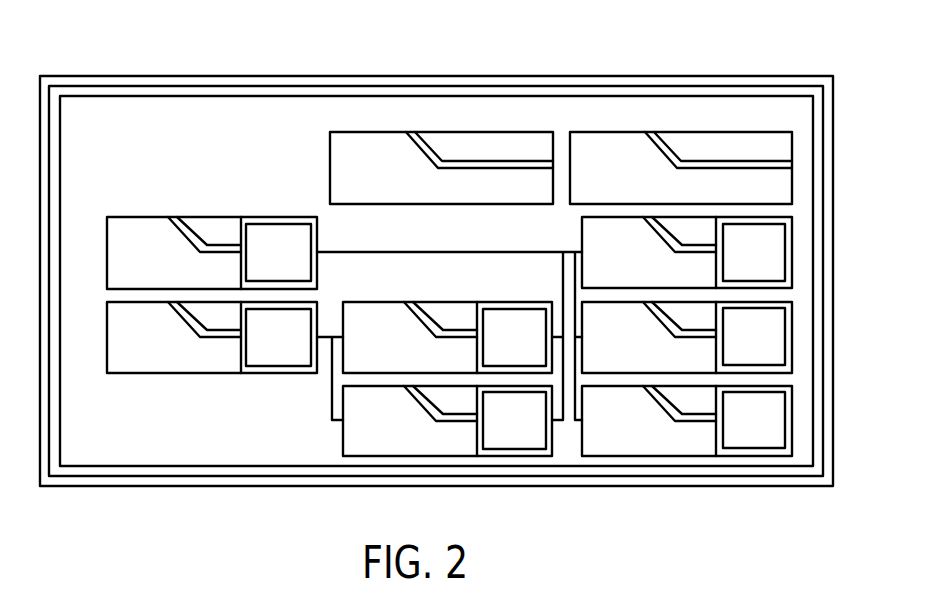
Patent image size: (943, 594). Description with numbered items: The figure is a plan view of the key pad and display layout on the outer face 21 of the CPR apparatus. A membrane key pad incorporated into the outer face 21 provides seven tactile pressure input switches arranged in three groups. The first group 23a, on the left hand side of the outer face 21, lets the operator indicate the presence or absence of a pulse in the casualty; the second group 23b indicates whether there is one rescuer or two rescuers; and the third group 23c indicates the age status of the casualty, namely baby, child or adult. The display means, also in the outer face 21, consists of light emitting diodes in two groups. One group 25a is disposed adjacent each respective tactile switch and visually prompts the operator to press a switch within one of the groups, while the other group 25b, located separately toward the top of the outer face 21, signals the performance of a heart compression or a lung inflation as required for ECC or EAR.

The outer face 21 is at (247, 132).
The first group of LEDs 25a is at (222, 235).
The second group of LEDs 25b is at (472, 148).
The first group of switches 23a is at (283, 237).
The second group of switches 23b is at (263, 343).
The third group of switches 23c is at (767, 250).